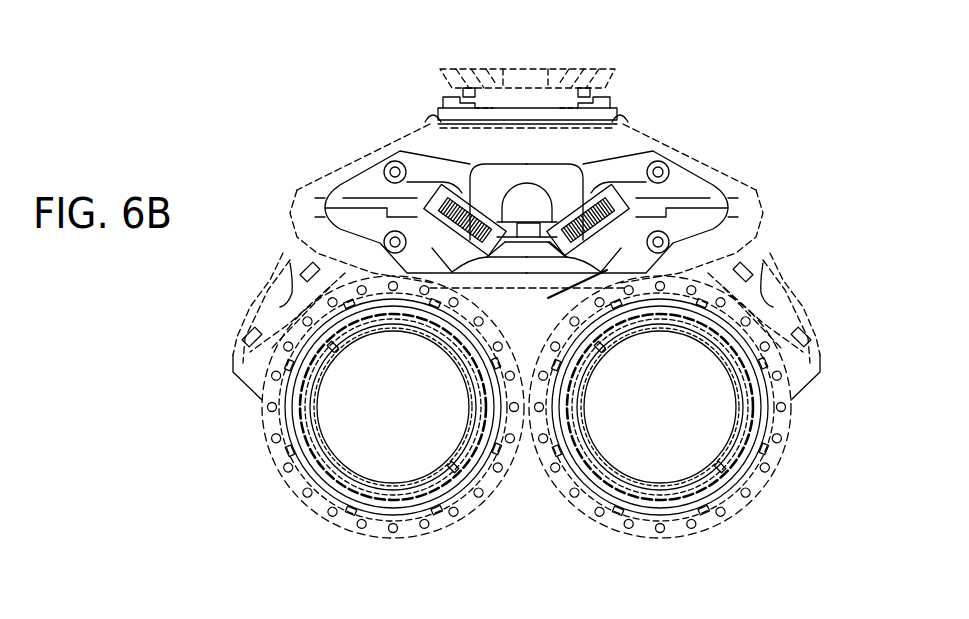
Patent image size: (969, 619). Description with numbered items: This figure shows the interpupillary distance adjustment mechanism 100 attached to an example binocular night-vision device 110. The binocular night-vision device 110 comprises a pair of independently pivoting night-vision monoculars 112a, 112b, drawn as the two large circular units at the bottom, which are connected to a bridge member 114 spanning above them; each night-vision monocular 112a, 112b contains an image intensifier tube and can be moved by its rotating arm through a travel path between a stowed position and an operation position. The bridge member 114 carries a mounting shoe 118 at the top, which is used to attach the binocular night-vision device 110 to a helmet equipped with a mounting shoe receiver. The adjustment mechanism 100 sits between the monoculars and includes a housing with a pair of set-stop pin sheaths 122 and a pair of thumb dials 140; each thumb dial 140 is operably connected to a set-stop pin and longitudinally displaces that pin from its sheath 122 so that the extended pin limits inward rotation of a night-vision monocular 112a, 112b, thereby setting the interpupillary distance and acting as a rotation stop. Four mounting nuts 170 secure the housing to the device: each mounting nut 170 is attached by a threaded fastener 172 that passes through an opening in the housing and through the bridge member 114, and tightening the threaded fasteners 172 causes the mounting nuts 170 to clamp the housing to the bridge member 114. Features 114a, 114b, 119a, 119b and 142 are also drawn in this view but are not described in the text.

The interpupillary distance adjustment mechanism 100 is at (355, 200).
The binocular night-vision device 110 is at (645, 118).
The night-vision monocular 112a is at (280, 455).
The night-vision monocular 112b is at (772, 455).
The bridge member 114 is at (410, 122).
The first fender 114a is at (251, 316).
The second fender 114b is at (809, 316).
The mounting shoe 118 is at (565, 83).
The first wheel flange 119a is at (273, 425).
The second wheel flange 119b is at (772, 425).
The set-stop pin sheath 122 is at (568, 198).
The thumb dial 140 is at (462, 213).
The lower bracket 142 is at (447, 268).
The mounting nut 170 is at (432, 118).
The threaded fastener 172 is at (393, 170).